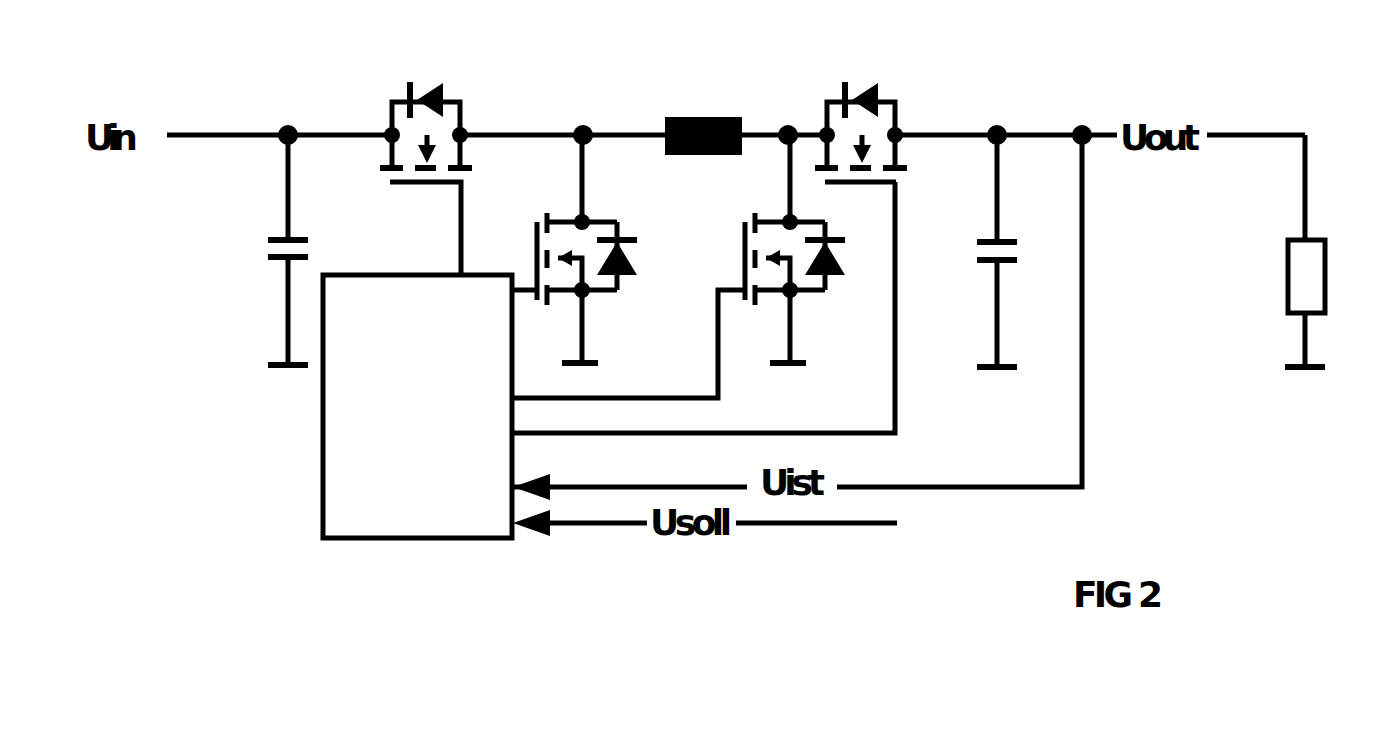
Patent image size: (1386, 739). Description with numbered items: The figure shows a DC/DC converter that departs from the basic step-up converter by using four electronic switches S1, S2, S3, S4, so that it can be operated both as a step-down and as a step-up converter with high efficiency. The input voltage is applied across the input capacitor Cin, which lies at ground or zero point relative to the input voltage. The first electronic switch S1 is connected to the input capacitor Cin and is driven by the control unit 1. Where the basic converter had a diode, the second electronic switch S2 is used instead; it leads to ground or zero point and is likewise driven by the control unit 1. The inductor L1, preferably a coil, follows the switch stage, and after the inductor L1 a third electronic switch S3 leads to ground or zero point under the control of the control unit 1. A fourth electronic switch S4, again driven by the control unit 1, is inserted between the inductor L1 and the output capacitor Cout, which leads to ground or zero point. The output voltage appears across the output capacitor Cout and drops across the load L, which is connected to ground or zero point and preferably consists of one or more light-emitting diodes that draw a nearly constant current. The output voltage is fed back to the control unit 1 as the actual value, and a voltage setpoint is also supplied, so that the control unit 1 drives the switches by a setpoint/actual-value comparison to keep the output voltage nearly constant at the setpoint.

The control unit 1 is at (375, 495).
The electronic switch S1 is at (426, 148).
The electronic switch S2 is at (585, 249).
The third electronic switch S3 is at (690, 266).
The fourth electronic switch S4 is at (710, 230).
The inductor L1 is at (703, 107).
The input capacitor Cin is at (250, 250).
The output capacitor Cout is at (964, 251).
The load L is at (1318, 251).